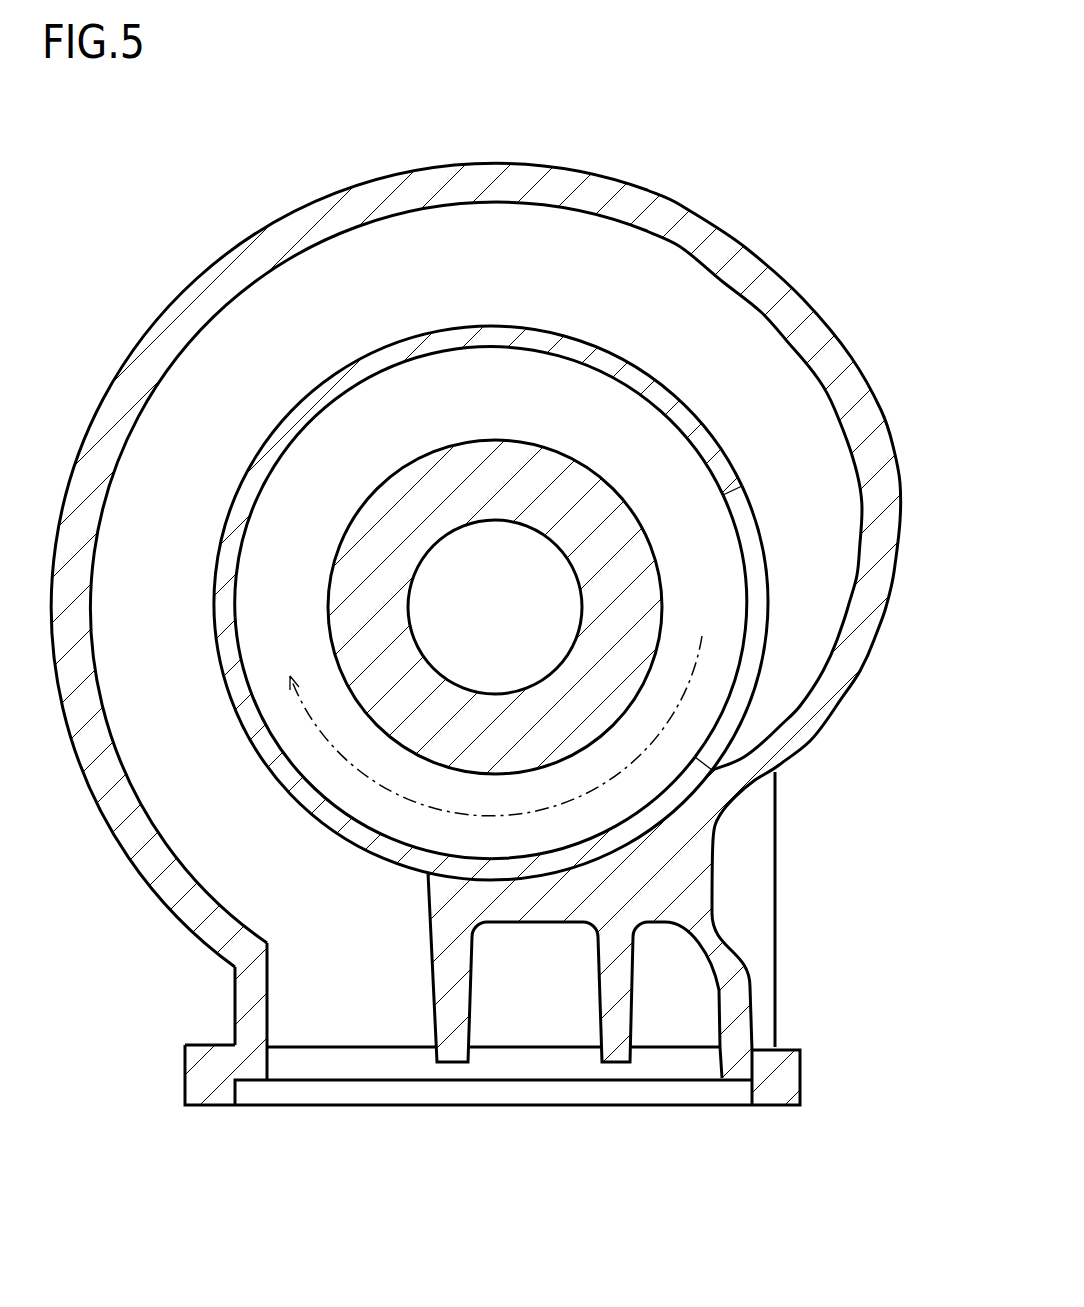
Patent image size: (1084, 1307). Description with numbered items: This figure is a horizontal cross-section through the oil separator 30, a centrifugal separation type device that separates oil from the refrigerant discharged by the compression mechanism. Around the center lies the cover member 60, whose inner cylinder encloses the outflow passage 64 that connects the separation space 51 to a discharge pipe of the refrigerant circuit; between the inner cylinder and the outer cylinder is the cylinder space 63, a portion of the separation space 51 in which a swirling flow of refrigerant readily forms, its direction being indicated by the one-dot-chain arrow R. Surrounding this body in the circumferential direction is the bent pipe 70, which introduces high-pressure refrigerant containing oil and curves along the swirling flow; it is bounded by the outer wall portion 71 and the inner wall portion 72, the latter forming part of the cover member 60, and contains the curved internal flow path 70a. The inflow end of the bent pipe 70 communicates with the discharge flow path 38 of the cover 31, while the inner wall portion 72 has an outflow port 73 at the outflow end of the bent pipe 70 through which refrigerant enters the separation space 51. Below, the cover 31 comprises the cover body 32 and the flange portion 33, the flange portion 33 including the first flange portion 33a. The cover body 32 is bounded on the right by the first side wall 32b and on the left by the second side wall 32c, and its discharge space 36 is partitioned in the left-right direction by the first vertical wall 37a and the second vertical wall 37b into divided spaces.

The oil separator 30 is at (790, 157).
The cover 31 is at (847, 1061).
The cover body 32 is at (754, 954).
The first side wall 32b is at (756, 1003).
The second side wall 32c is at (257, 1008).
The flange portion 33 is at (217, 1117).
The first flange portion 33a is at (788, 1107).
The discharge space 36 is at (518, 978).
The first vertical wall 37a is at (622, 1050).
The second vertical wall 37b is at (457, 1050).
The discharge flow path 38 is at (347, 1018).
The separation space 51 is at (443, 421).
The cover member 60 is at (494, 289).
The cylinder space 63 is at (477, 421).
The outflow passage 64 is at (470, 618).
The bent pipe 70 is at (241, 227).
The internal flow path 70a is at (771, 354).
The outer wall portion 71 is at (217, 292).
The inner wall portion 72 is at (283, 440).
The outflow port 73 is at (767, 634).